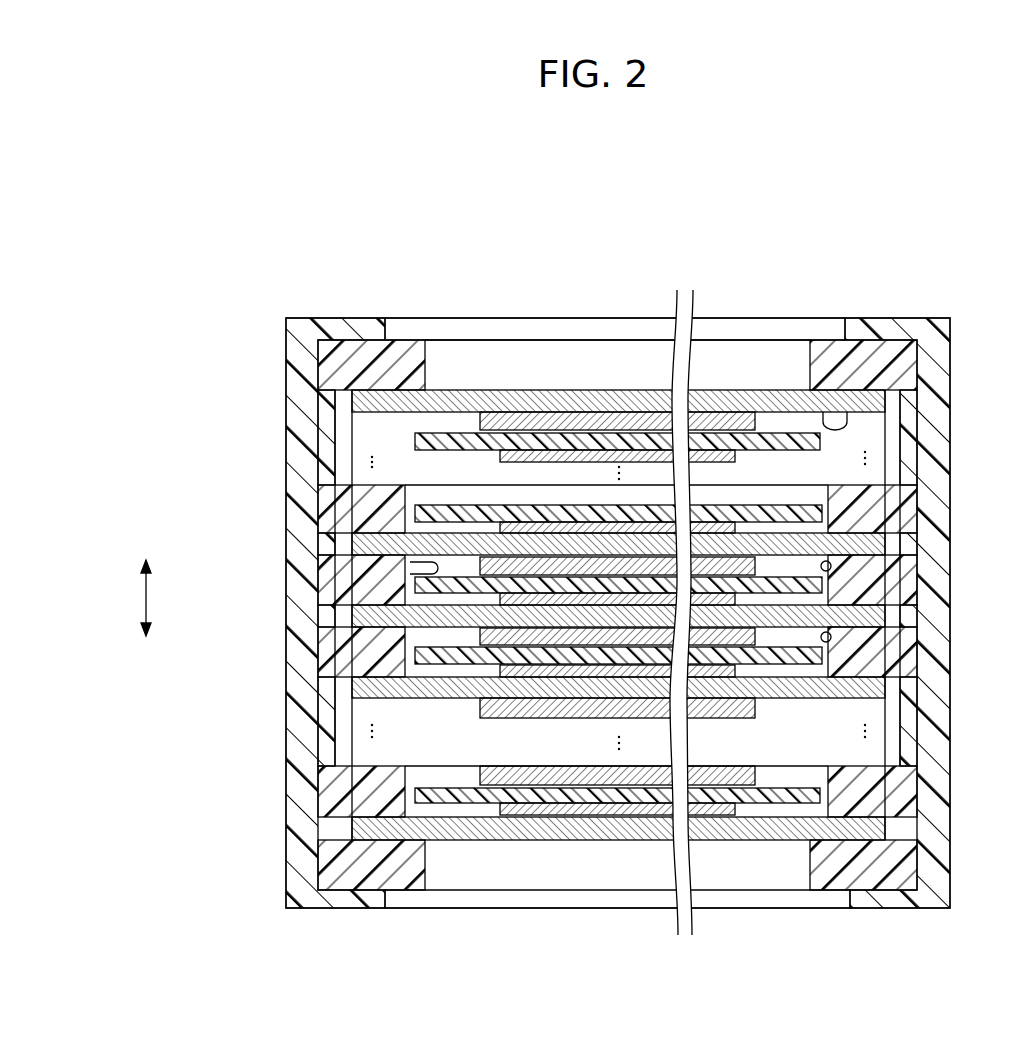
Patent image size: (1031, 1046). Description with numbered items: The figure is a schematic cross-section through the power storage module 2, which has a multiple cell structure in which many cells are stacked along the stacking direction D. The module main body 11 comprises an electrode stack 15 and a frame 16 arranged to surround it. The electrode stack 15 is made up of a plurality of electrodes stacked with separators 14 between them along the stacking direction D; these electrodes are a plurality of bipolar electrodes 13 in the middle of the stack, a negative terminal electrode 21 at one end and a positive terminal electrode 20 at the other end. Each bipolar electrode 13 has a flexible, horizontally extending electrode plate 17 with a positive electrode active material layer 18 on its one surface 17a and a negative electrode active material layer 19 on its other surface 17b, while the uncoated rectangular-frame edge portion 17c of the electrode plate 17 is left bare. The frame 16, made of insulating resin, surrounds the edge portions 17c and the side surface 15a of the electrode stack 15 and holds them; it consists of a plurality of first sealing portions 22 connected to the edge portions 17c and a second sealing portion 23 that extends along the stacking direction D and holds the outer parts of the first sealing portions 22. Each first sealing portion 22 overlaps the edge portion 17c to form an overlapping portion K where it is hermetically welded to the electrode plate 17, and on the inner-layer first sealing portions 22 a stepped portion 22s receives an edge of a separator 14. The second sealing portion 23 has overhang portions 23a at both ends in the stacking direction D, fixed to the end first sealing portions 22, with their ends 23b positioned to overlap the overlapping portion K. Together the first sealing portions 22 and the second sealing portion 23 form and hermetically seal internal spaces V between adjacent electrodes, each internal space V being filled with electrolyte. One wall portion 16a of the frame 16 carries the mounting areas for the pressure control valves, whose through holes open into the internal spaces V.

The power storage module 2 is at (316, 266).
The module main body 11 is at (951, 274).
The bipolar electrode 13 is at (231, 482).
The separator 14 is at (835, 428).
The electrode stack 15 is at (757, 332).
The side surface of the electrode stack 15a is at (343, 470).
The frame 16 is at (224, 310).
The wall portion 16a is at (905, 770).
The electrode plate 17 is at (352, 401).
The one surface 17a is at (800, 393).
The other surface 17b is at (843, 410).
The edge portion 17c is at (875, 547).
The positive electrode active material layer 18 is at (415, 510).
The negative electrode active material layer 19 is at (500, 456).
The positive terminal electrode 20 is at (224, 800).
The negative terminal electrode 21 is at (224, 380).
The first sealing portion 22 is at (335, 365).
The stepped portion 22s is at (413, 483).
The second sealing portion 23 is at (305, 330).
The overhang portion 23a is at (348, 318).
The end of the overhang portion 23b is at (400, 318).
The stacking direction D is at (140, 600).
The overlapping portion K is at (407, 400).
The internal space V is at (915, 570).